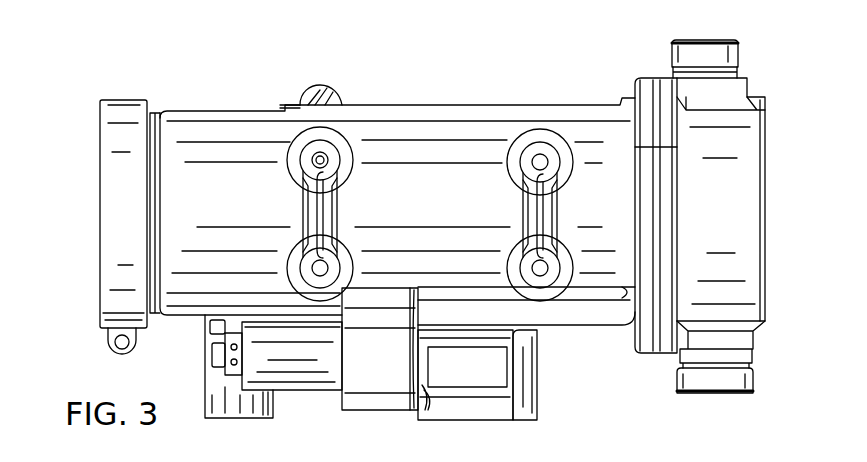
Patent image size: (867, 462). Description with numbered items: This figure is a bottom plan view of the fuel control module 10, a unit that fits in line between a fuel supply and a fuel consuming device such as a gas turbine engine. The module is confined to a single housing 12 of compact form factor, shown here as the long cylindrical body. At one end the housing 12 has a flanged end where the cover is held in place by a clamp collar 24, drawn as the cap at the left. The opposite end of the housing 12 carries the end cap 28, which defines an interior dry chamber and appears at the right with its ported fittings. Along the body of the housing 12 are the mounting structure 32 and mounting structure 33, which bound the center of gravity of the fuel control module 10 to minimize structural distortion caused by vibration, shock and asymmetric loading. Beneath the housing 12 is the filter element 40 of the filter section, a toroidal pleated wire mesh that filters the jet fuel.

The fuel control module 10 is at (437, 63).
The housing 12 is at (527, 111).
The clamp collar 24 is at (115, 183).
The end cap 28 is at (750, 208).
The mounting structure 32 is at (327, 210).
The mounting structure 33 is at (543, 212).
The filter element 40 is at (295, 384).